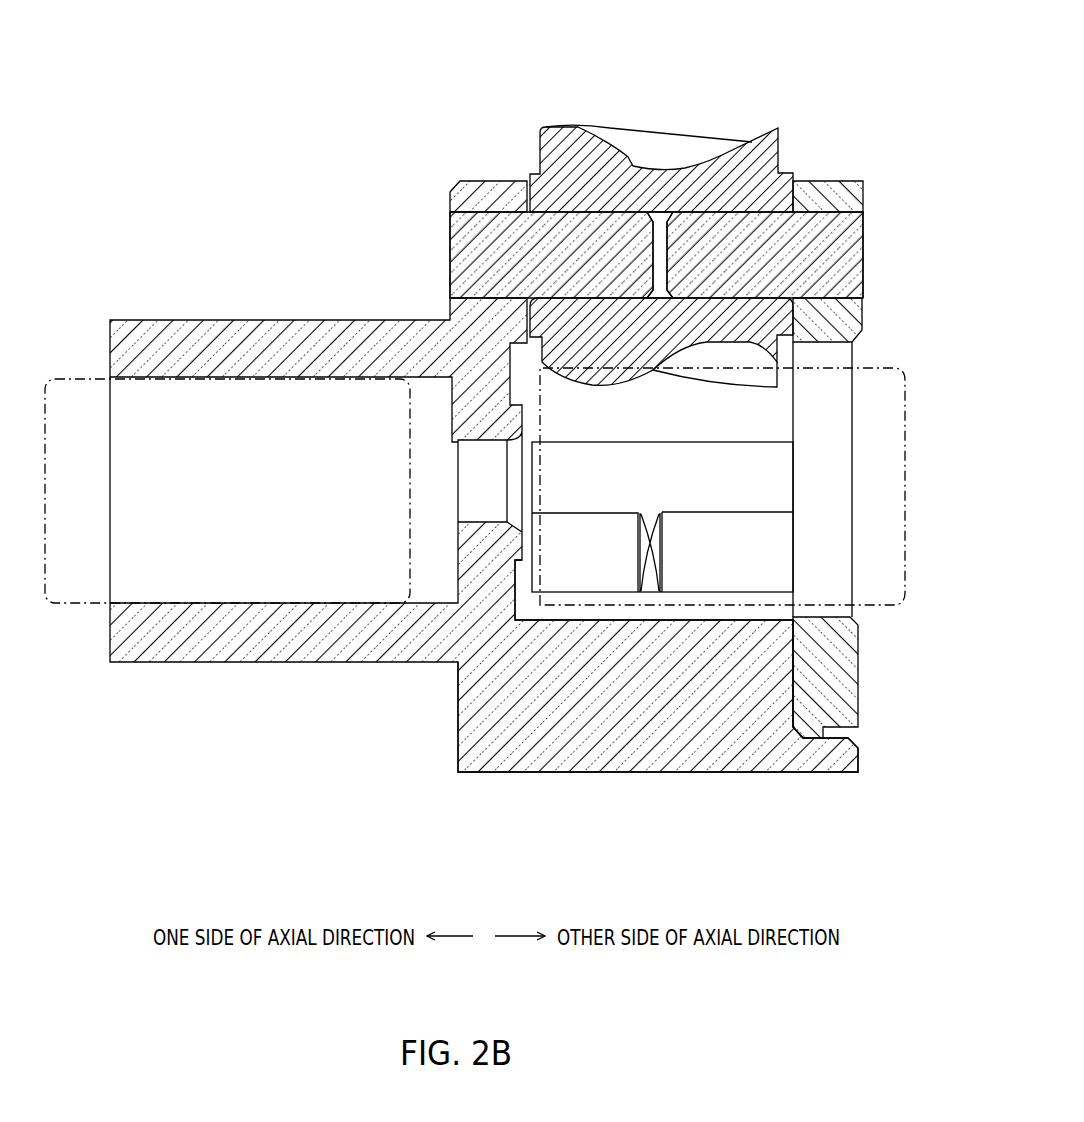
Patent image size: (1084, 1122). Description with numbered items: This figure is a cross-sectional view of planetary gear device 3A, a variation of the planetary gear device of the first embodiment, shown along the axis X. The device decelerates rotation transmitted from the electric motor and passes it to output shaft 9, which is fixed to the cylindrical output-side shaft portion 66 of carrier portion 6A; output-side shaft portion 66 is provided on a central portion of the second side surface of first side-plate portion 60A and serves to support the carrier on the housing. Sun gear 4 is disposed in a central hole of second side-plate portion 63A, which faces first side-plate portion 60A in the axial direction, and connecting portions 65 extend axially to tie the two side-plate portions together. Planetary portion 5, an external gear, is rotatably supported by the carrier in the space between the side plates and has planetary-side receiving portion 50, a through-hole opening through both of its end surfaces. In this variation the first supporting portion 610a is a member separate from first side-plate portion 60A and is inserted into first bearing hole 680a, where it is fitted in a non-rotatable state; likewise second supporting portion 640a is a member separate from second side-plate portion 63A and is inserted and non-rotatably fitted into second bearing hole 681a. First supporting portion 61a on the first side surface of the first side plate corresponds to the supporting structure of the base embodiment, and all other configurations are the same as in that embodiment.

The planetary gear device 3A is at (484, 543).
The output-side shaft portion 66 is at (245, 343).
The connecting portion 65 is at (679, 733).
The output shaft 9 is at (68, 392).
The sun gear 4 is at (882, 547).
The carrier portion 6A is at (630, 372).
The first side-plate portion 60A is at (463, 200).
The planetary-side receiving portion 50 is at (577, 228).
The first bearing hole 680a is at (452, 228).
The first supporting portion 610a is at (608, 245).
The second bearing hole 681a is at (828, 210).
The second side-plate portion 63A is at (832, 205).
The planetary portion 5 is at (661, 197).
The second supporting portion 640a is at (752, 210).
The first supporting portion 61a is at (590, 545).
The axis X is at (843, 97).